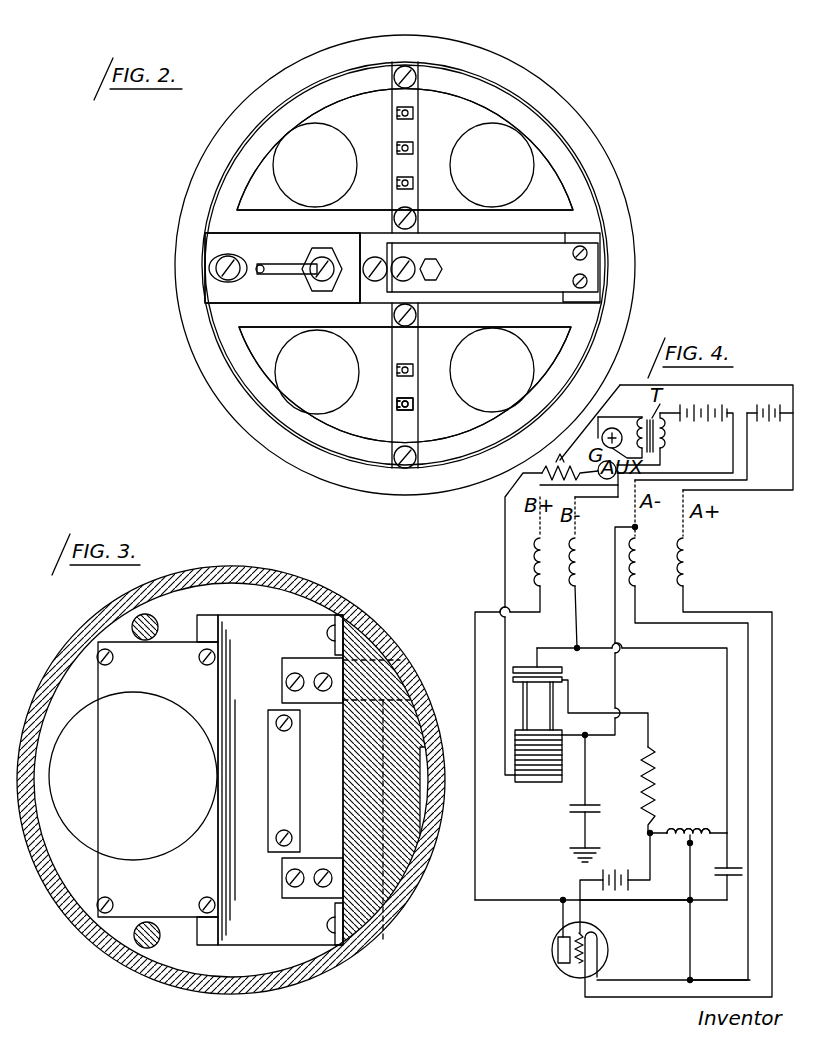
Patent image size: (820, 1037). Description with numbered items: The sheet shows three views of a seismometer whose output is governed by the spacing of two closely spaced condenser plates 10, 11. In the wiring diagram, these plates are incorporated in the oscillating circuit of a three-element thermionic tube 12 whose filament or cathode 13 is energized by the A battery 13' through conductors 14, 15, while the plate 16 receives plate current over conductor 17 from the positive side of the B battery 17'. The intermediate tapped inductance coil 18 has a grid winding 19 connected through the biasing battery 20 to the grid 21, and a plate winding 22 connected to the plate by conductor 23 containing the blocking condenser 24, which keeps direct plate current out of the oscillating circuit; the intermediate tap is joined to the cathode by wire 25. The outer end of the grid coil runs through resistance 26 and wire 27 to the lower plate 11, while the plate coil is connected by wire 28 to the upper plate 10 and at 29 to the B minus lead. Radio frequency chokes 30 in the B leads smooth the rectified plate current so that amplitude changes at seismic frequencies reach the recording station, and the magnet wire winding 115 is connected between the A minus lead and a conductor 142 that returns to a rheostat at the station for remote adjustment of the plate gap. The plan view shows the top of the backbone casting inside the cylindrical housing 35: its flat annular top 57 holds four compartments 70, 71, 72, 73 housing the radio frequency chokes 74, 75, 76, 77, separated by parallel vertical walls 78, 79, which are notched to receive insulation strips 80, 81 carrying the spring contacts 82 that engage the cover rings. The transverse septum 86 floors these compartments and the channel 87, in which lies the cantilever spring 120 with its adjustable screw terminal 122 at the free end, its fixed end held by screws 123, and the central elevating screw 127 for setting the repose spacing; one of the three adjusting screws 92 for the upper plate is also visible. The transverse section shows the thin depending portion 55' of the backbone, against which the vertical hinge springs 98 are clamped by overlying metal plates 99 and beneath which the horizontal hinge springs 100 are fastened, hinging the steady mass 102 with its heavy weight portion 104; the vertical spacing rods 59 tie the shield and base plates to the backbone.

In FIG. 4, the upper condenser plate 10 is at (565, 668).
In FIG. 3, the lower condenser plate 11 is at (90, 838).
In FIG. 4, the lower condenser plate 11 is at (565, 680).
In FIG. 4, the three element thermionic tube 12 is at (555, 935).
In FIG. 4, the filament or cathode 13 is at (613, 954).
In FIG. 4, the A battery 13' is at (770, 432).
In FIG. 4, the conductor 14 is at (633, 618).
In FIG. 4, the conductor 15 is at (720, 612).
In FIG. 4, the plate 16 is at (556, 953).
In FIG. 4, the conductor 17 is at (601, 864).
In FIG. 4, the B battery 17' is at (675, 439).
In FIG. 4, the intermediate tapped inductance coil 18 is at (683, 847).
In FIG. 4, the grid winding 19 is at (675, 830).
In FIG. 4, the biasing battery 20 is at (603, 866).
In FIG. 4, the grid 21 is at (594, 935).
In FIG. 4, the plate winding 22 is at (700, 830).
In FIG. 4, the conductor 23 is at (660, 903).
In FIG. 4, the blocking condenser 24 is at (735, 880).
In FIG. 4, the wire 25 is at (697, 950).
In FIG. 4, the resistance 26 is at (655, 792).
In FIG. 4, the wire 27 is at (645, 713).
In FIG. 4, the wire 28 is at (727, 730).
In FIG. 4, the B minus lead connection 29 is at (577, 646).
In FIG. 4, the radio frequency chokes 30 is at (570, 578).
In FIG. 2, the outer casing or housing 35 is at (623, 204).
In FIG. 3, the outer casing or housing 35 is at (76, 917).
In FIG. 3, the thin depending portion of the backbone 55' is at (401, 781).
In FIG. 2, the flat annular top of the backbone casting 57 is at (524, 118).
In FIG. 3, the spacing rods 59 is at (155, 620).
In FIG. 2, the compartment 70 is at (247, 182).
In FIG. 2, the compartment 71 is at (553, 181).
In FIG. 2, the compartment 72 is at (597, 328).
In FIG. 2, the compartment 73 is at (257, 357).
In FIG. 2, the radio frequency choke 74 is at (315, 165).
In FIG. 2, the radio frequency choke 75 is at (492, 165).
In FIG. 2, the radio frequency choke 76 is at (492, 370).
In FIG. 2, the radio frequency choke 77 is at (317, 372).
In FIG. 2, the vertical wall 78 is at (450, 204).
In FIG. 2, the vertical wall 79 is at (440, 318).
In FIG. 2, the insulation strip 80 is at (413, 128).
In FIG. 2, the insulation strip 81 is at (415, 416).
In FIG. 2, the spring contacts 82 is at (396, 113).
In FIG. 2, the transverse septum 86 is at (240, 241).
In FIG. 2, the channel 87 is at (217, 322).
In FIG. 2, the adjusting screw 92 is at (212, 270).
In FIG. 3, the vertical hinge springs 98 is at (345, 632).
In FIG. 3, the overlying metal plates 99 is at (340, 612).
In FIG. 3, the horizontal hinge springs 100 is at (305, 670).
In FIG. 3, the steady mass 102 is at (262, 925).
In FIG. 3, the weight portion 104 is at (88, 680).
In FIG. 4, the magnet wire winding 115 is at (538, 770).
In FIG. 2, the cantilever spring 120 is at (551, 225).
In FIG. 2, the adjustable screw terminal 122 is at (442, 262).
In FIG. 2, the screws 123 is at (590, 253).
In FIG. 2, the elevating screw 127 is at (395, 289).
In FIG. 4, the conductor 142 is at (505, 556).